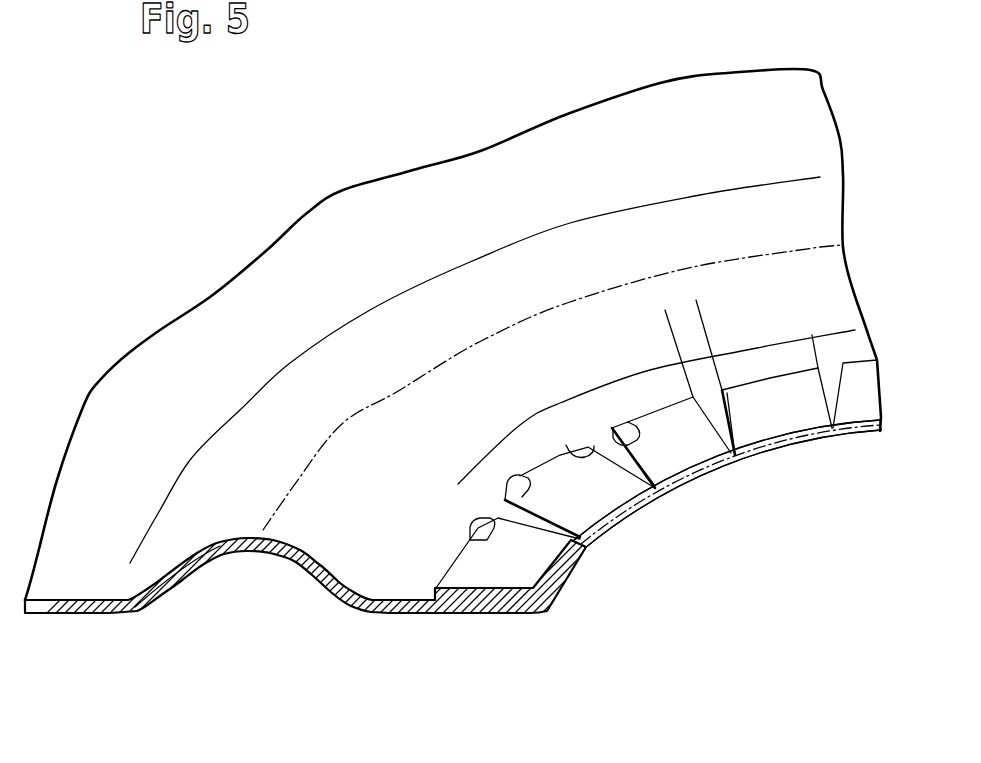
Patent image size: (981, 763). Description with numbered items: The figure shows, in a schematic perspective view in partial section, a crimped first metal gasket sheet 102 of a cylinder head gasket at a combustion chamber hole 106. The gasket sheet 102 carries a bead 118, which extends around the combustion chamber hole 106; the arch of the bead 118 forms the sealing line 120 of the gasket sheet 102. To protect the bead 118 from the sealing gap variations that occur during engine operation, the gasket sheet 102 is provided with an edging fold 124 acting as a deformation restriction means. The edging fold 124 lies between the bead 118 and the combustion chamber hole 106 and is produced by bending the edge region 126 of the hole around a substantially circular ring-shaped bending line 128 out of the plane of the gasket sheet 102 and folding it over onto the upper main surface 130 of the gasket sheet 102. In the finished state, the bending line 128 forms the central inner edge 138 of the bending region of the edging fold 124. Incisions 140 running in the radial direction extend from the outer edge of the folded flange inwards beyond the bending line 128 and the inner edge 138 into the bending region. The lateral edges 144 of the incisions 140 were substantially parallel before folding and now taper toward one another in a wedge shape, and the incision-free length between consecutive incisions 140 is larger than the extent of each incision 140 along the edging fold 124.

The first metal gasket sheet 102 is at (183, 357).
The combustion chamber hole 106 is at (773, 557).
The bead 118 is at (249, 550).
The sealing line 120 is at (345, 425).
The edging fold 124 is at (513, 623).
The edge region 126 is at (787, 412).
The bending line 128 is at (567, 572).
The upper main surface 130 is at (400, 588).
The inner edge 138 is at (632, 512).
The incisions 140 is at (489, 506).
The lateral edges 144 is at (473, 528).